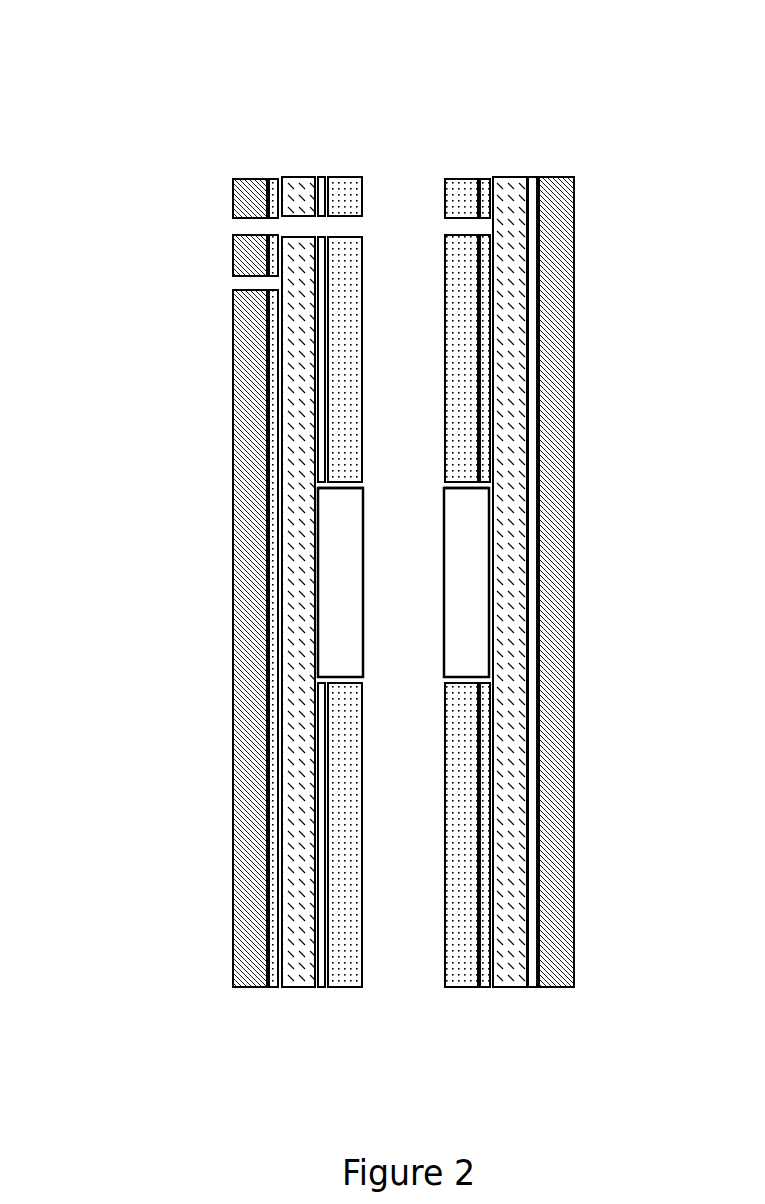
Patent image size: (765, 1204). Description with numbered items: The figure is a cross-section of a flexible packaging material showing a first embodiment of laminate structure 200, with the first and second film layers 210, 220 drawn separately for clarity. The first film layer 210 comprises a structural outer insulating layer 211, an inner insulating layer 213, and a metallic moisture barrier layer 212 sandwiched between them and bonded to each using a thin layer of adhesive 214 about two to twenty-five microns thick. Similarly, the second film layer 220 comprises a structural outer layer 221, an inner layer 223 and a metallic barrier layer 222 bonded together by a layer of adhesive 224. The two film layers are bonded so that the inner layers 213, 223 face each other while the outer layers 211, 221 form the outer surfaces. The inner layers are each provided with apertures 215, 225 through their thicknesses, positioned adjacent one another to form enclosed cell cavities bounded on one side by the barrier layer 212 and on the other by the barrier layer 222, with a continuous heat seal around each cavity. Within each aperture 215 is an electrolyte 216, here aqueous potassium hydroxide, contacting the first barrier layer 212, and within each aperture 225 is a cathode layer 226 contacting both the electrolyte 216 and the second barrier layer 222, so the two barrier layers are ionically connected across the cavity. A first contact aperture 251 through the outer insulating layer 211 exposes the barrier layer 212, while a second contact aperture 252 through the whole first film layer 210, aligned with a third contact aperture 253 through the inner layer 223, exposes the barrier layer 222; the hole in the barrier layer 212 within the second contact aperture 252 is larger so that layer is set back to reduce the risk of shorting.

The laminate structure 200 is at (135, 87).
The first film layer 210 is at (362, 992).
The structural outer insulating layer 211 is at (250, 393).
The metallic moisture barrier layer 212 is at (290, 663).
The inner insulating layer 213 is at (344, 830).
The layer of adhesive 214 is at (273, 490).
The aperture 215 is at (331, 484).
The electrolyte 216 is at (333, 585).
The second film layer 220 is at (574, 992).
The structural outer layer 221 is at (558, 312).
The metallic barrier layer 222 is at (510, 680).
The inner layer 223 is at (468, 860).
The layer of adhesive 224 is at (533, 430).
The aperture 225 is at (483, 484).
The cathode layer 226 is at (473, 583).
The first contact aperture 251 is at (245, 290).
The second contact aperture 252 is at (245, 233).
The third contact aperture 253 is at (470, 233).